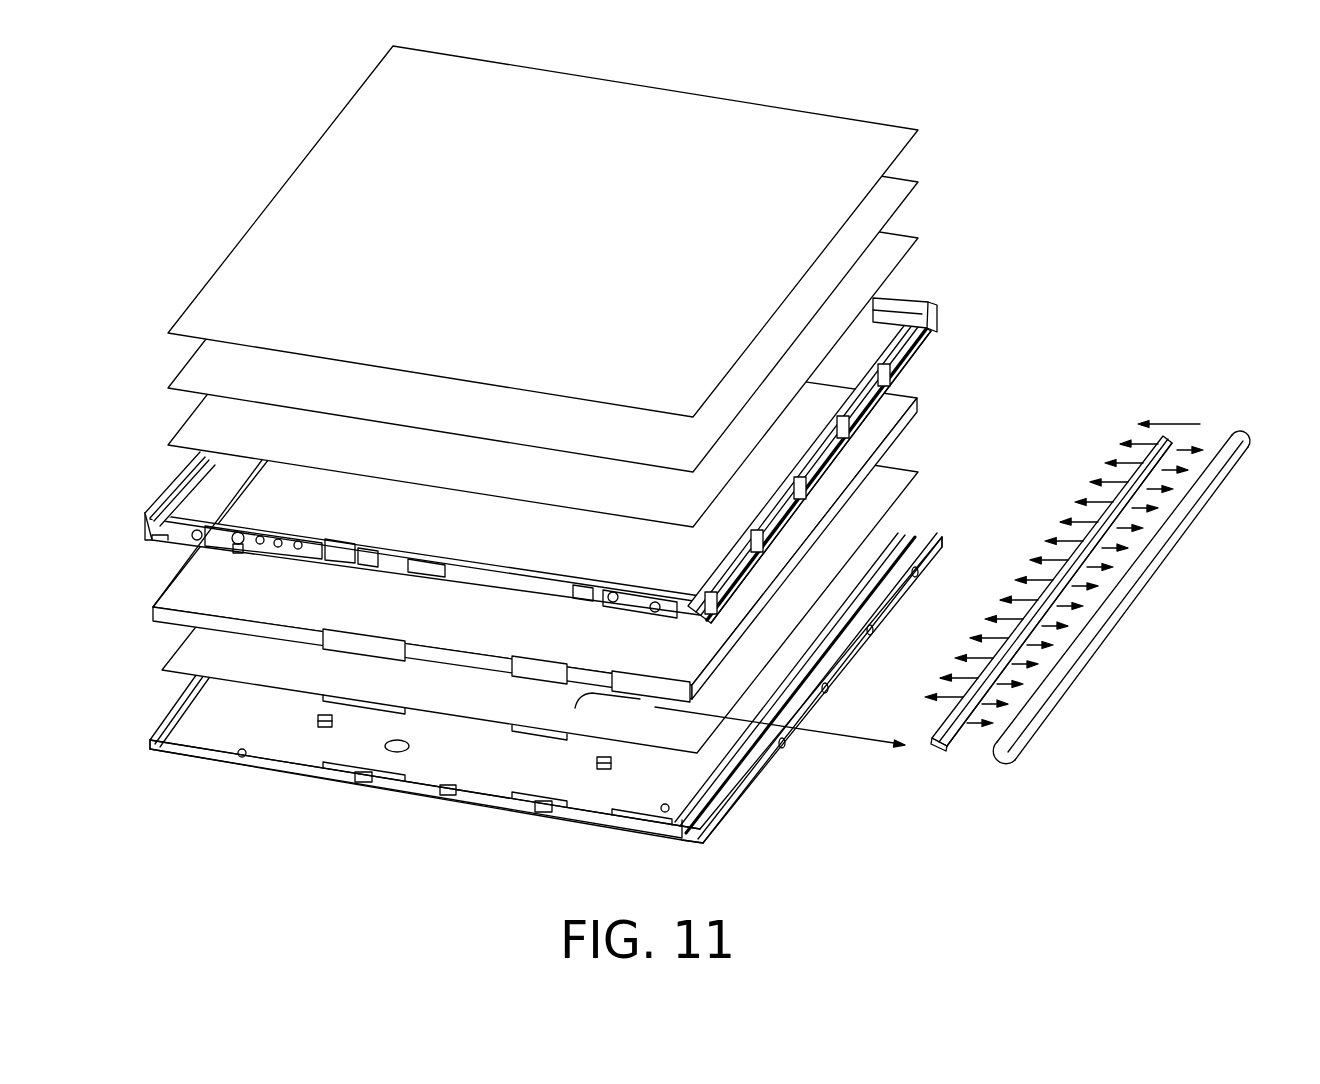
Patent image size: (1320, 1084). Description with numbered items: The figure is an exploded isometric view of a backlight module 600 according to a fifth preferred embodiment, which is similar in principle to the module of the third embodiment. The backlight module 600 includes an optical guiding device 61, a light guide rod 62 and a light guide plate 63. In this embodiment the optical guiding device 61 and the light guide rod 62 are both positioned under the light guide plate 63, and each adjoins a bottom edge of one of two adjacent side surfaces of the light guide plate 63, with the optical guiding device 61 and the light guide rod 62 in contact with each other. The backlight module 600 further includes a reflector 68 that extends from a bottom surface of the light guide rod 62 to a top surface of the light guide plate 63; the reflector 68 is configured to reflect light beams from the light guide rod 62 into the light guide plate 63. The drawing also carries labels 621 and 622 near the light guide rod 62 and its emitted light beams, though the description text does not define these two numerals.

The backlight module 600 is at (257, 149).
The optical guiding device 61 is at (657, 708).
The light guide rod 62 is at (1110, 573).
The light emitting surface 621 is at (1165, 446).
The light beams 622 is at (1103, 495).
The light guide plate 63 is at (907, 398).
The reflector 68 is at (1062, 683).